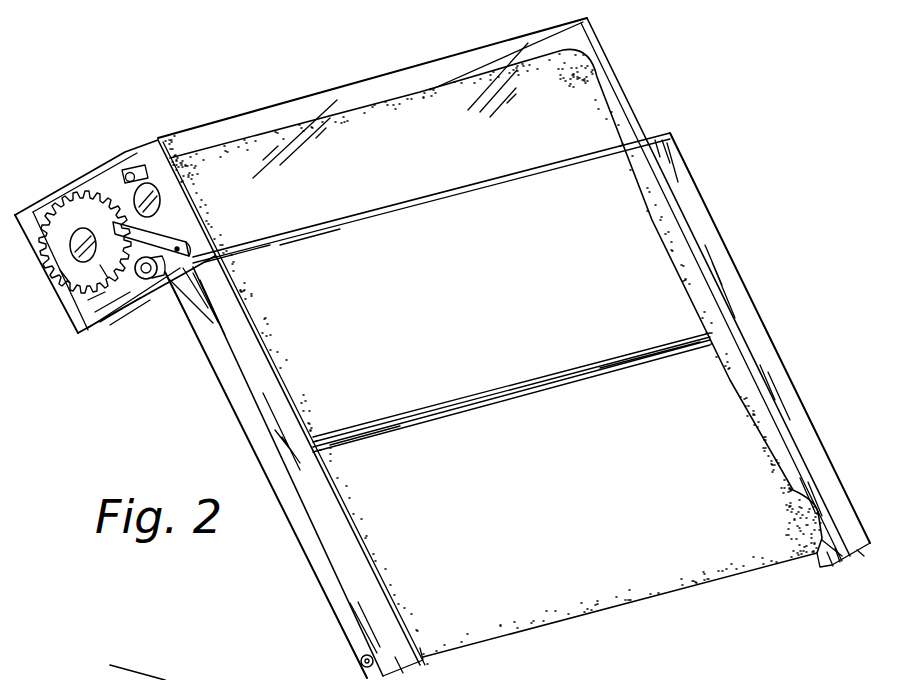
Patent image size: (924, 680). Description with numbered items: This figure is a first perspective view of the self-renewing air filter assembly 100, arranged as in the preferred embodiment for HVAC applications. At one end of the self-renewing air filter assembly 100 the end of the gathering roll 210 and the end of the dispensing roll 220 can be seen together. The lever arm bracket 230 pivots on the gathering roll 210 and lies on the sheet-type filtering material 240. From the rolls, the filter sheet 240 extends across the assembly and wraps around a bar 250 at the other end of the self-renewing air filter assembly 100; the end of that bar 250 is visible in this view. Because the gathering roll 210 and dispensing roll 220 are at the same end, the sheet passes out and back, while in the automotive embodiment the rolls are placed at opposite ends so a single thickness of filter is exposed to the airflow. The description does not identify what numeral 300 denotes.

The self-renewing air filter assembly 100 is at (442, 348).
The gathering roll 210 is at (80, 260).
The dispensing roll 220 is at (152, 183).
The lever arm bracket 230 is at (538, 378).
The sheet-type filtering material 240 is at (522, 598).
The bar 250 is at (361, 662).
The support bracket 300 is at (110, 678).